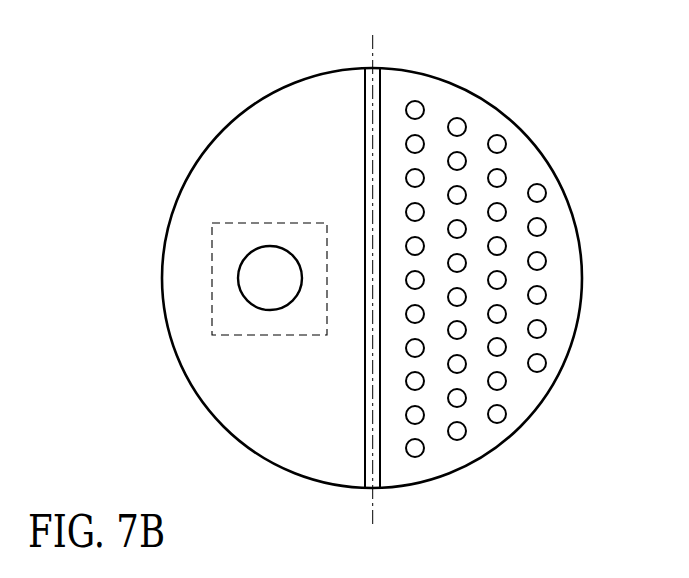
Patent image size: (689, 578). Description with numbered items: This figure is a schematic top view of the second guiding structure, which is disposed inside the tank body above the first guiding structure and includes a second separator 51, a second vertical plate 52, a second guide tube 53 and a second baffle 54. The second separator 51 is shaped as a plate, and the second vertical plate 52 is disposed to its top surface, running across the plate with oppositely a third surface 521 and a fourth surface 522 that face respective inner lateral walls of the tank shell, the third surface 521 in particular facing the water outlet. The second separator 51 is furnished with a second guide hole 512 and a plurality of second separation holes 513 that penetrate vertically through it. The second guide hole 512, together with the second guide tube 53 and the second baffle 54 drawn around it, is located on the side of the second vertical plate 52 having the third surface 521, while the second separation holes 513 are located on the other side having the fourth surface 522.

The second separator 51 is at (228, 148).
The second vertical plate 52 is at (368, 257).
The third surface 521 is at (363, 108).
The fourth surface 522 is at (382, 108).
The second guide hole 512 is at (240, 258).
The second guide tube 53 is at (270, 297).
The second baffle 54 is at (212, 287).
The second separation holes 513 is at (540, 262).